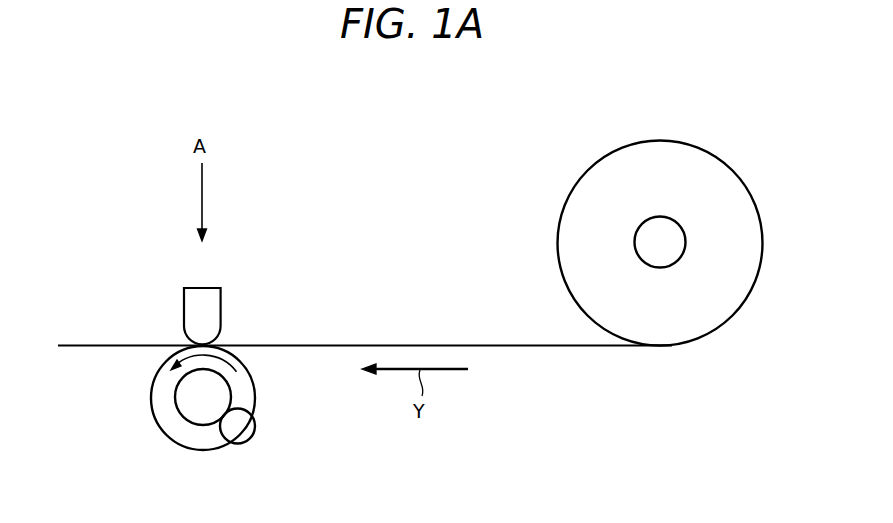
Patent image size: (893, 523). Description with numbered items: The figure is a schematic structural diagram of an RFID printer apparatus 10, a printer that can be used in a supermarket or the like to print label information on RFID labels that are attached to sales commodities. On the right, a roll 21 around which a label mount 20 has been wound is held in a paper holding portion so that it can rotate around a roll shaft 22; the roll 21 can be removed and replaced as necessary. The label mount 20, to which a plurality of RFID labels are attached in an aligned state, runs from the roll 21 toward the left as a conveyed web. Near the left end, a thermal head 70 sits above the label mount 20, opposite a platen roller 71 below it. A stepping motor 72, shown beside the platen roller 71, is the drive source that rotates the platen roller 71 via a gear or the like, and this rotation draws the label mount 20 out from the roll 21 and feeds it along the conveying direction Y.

The RFID printer apparatus 10 is at (483, 113).
The label mount 20 is at (327, 343).
The roll 21 is at (703, 150).
The roll shaft 22 is at (658, 217).
The thermal head 70 is at (184, 306).
The platen roller 71 is at (152, 394).
The stepping motor 72 is at (255, 427).